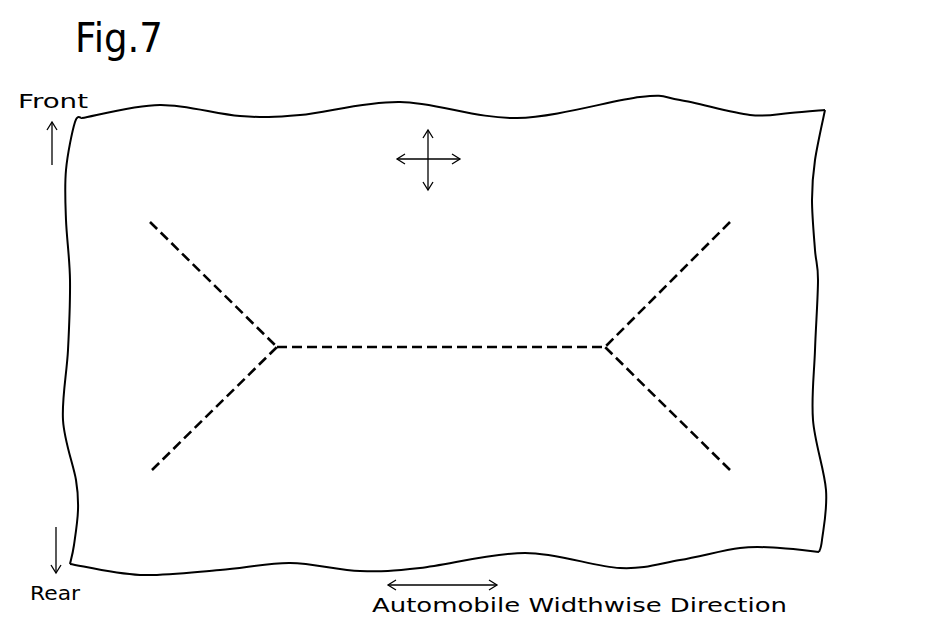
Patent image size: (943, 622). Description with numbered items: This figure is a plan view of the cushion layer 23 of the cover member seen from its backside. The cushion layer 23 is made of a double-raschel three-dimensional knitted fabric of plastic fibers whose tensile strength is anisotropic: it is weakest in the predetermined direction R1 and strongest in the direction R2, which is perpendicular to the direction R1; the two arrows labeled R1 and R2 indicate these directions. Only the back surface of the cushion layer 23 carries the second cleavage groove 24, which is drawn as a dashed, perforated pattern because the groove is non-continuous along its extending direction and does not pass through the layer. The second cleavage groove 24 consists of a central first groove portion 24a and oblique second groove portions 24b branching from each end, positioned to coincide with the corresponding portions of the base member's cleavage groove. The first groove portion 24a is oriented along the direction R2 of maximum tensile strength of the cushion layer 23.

The cushion layer 23 is at (298, 546).
The second cleavage groove 24 is at (440, 344).
The first groove portion 24a is at (436, 350).
The second groove portions 24b is at (235, 302).
The predetermined direction R1 is at (425, 176).
The direction perpendicular to the predetermined direction R2 is at (446, 163).